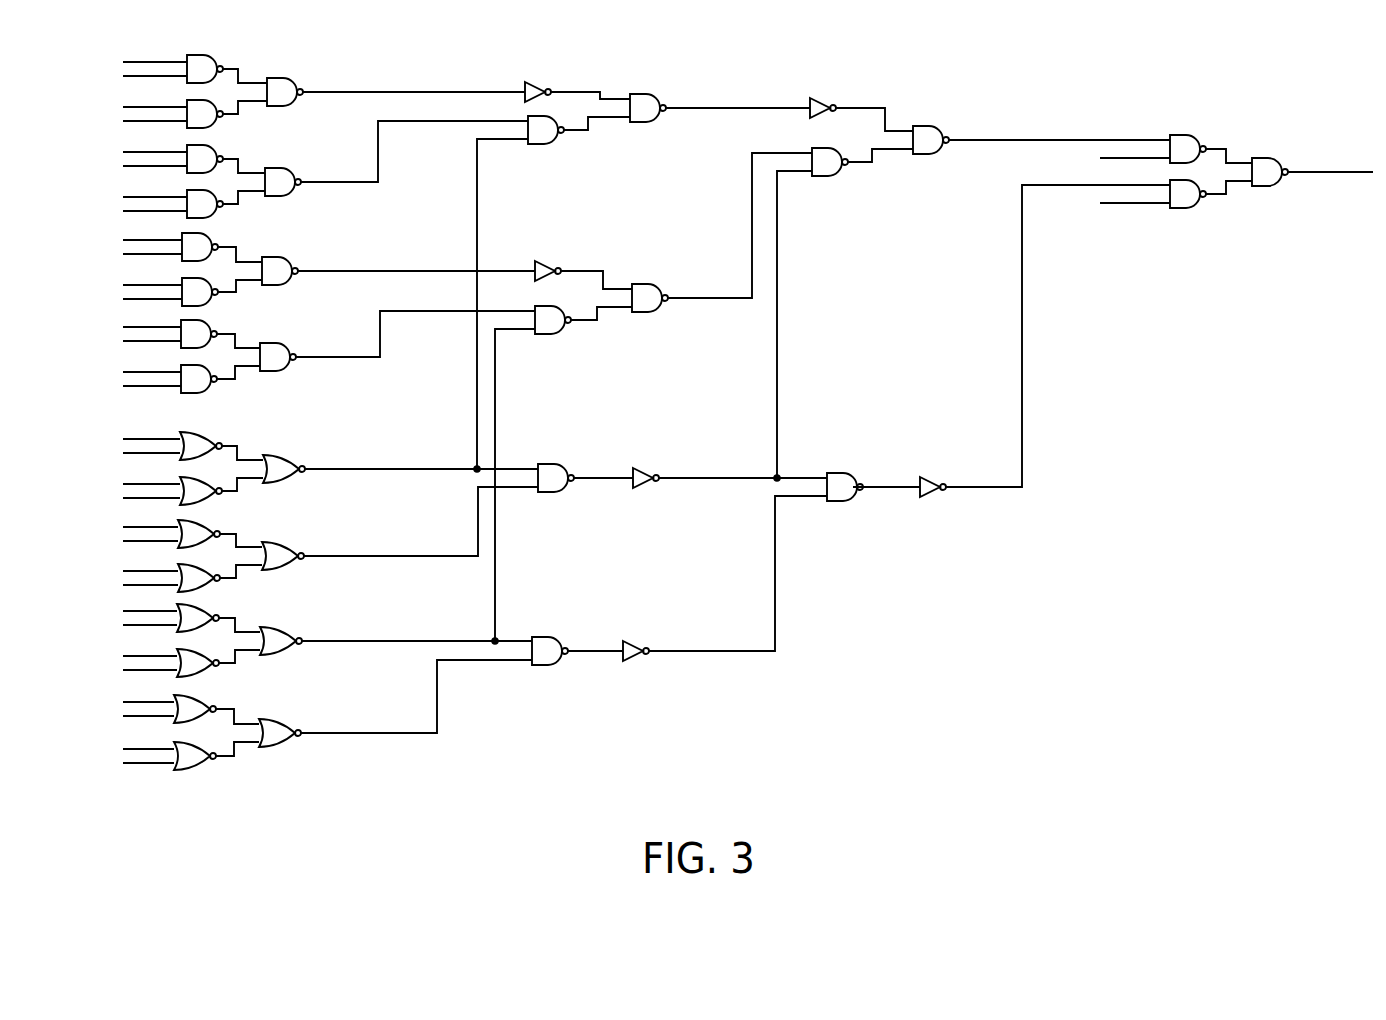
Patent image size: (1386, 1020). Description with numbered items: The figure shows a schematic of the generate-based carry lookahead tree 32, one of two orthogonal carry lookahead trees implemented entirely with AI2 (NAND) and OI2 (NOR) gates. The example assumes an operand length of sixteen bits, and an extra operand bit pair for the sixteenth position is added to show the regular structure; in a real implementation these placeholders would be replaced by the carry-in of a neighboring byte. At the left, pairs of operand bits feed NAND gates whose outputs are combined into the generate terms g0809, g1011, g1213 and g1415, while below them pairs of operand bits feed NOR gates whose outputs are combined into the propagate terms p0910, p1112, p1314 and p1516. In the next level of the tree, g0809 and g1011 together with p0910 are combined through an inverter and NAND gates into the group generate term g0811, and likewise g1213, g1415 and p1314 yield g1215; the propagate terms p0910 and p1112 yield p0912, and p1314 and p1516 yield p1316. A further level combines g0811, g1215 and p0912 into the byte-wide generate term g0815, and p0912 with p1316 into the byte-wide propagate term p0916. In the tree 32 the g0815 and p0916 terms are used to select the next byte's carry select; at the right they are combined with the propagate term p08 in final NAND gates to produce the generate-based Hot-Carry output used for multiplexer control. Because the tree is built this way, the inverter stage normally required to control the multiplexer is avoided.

The generate-based carry lookahead tree 32 is at (748, 409).
The generate term for bits 8-9 g0809 is at (311, 90).
The generate term for bits 10-11 g1011 is at (310, 180).
The generate term for bits 12-13 g1213 is at (307, 269).
The generate term for bits 14-15 g1415 is at (305, 355).
The propagate term for bits 9-10 p0910 is at (314, 467).
The propagate term for bits 11-12 p1112 is at (313, 554).
The propagate term for bits 13-14 p1314 is at (312, 639).
The propagate term for bits 15-16 p1516 is at (309, 731).
The generate term for bits 8-11 g0811 is at (680, 106).
The generate term for bits 12-15 g1215 is at (681, 296).
The generate term for bits 8-15 g0815 is at (964, 138).
The propagate term for bits 9-12 p0912 is at (630, 476).
The propagate term for bits 13-16 p1316 is at (626, 649).
The propagate term for bits 9-16 p0916 is at (917, 485).
The propagate term for bit 8 p08 is at (1135, 171).